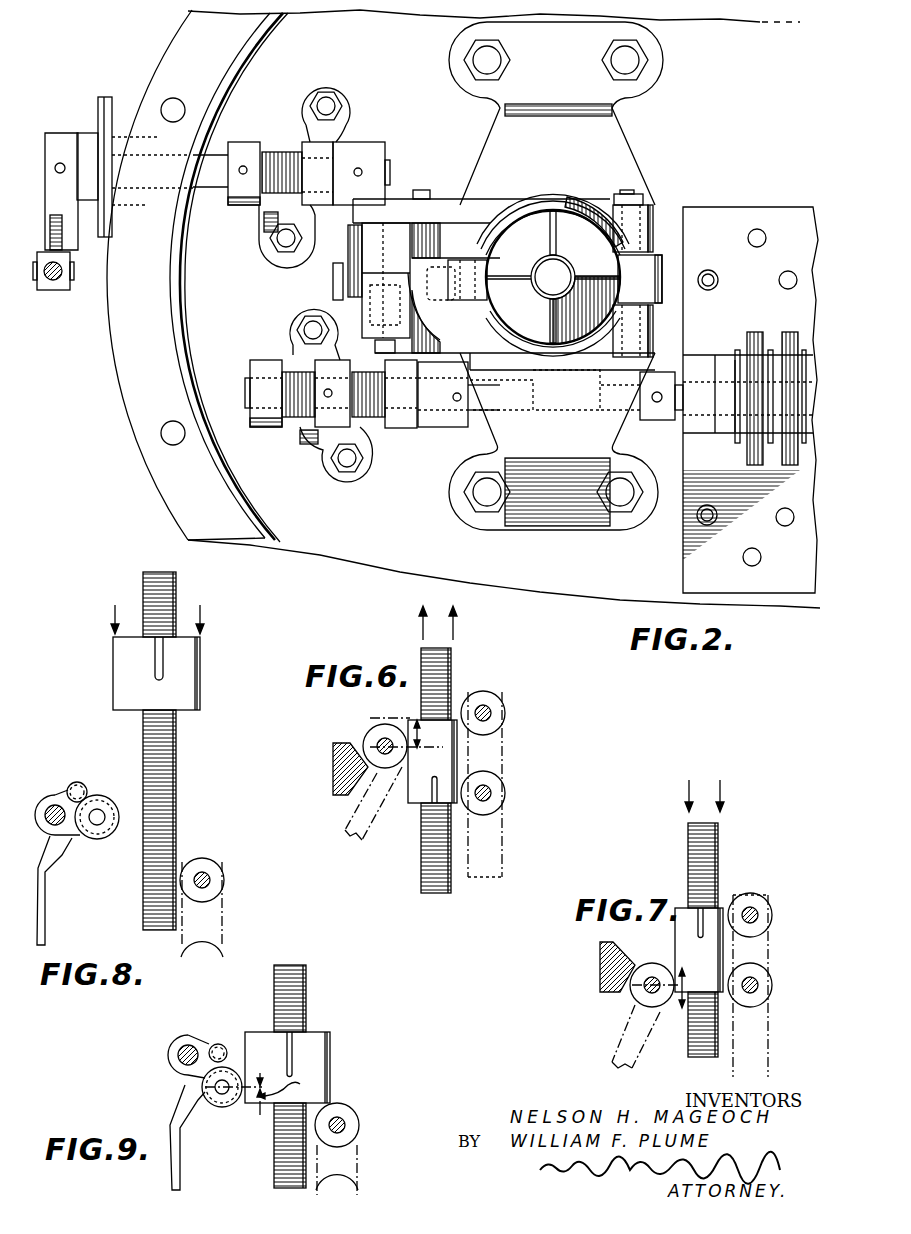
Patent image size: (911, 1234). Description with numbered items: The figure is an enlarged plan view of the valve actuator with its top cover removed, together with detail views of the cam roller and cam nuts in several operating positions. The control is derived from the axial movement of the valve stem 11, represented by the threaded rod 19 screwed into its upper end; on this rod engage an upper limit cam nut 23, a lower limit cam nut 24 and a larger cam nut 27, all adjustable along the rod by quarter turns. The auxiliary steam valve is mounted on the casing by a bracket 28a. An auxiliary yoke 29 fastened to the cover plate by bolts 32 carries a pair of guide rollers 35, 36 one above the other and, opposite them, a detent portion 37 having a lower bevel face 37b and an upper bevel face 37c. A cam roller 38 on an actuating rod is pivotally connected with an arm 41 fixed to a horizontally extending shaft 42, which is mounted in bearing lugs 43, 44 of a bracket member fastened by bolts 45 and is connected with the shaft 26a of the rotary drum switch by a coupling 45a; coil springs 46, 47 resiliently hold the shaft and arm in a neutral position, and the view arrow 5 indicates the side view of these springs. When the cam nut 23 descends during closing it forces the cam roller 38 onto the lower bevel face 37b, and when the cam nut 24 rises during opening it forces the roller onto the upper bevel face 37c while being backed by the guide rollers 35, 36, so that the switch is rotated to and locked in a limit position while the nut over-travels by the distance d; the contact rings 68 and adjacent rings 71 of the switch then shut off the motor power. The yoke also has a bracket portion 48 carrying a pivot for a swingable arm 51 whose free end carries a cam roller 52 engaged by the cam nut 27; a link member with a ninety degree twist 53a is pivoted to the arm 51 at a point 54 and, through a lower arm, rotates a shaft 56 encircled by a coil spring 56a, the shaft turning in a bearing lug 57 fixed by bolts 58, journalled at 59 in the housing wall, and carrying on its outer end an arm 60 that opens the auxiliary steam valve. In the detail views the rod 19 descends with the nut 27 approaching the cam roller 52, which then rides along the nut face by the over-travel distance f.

In FIG. 2, the view direction arrow 5 is at (347, 490).
In FIG. 2, the valve stem 11 is at (745, 218).
In FIG. 2, the threaded rod 19 is at (553, 277).
In FIG. 8, the threaded rod 19 is at (145, 607).
In FIG. 6, the threaded rod 19 is at (421, 860).
In FIG. 7, the threaded rod 19 is at (719, 845).
In FIG. 9, the threaded rod 19 is at (308, 1000).
In FIG. 2, the upper limit cam nut 23 is at (580, 208).
In FIG. 7, the upper limit cam nut 23 is at (718, 906).
In FIG. 6, the lower limit cam nut 24 is at (406, 722).
In FIG. 2, the switch shaft 26a is at (680, 425).
In FIG. 2, the cam nut 27 is at (548, 212).
In FIG. 8, the cam nut 27 is at (170, 703).
In FIG. 9, the cam nut 27 is at (333, 1062).
In FIG. 2, the bracket 28a is at (662, 294).
In FIG. 2, the auxiliary yoke 29 is at (625, 190).
In FIG. 2, the bolts 32 is at (468, 58).
In FIG. 2, the guide roller 35 is at (664, 270).
In FIG. 8, the guide roller 35 is at (213, 891).
In FIG. 6, the guide roller 35 is at (506, 713).
In FIG. 7, the guide roller 35 is at (773, 915).
In FIG. 9, the guide roller 35 is at (360, 1125).
In FIG. 6, the guide roller 36 is at (506, 795).
In FIG. 7, the guide roller 36 is at (773, 985).
In FIG. 6, the detent portion 37 is at (333, 776).
In FIG. 7, the detent portion 37 is at (598, 992).
In FIG. 6, the lower bevel face 37b is at (356, 800).
In FIG. 7, the lower bevel face 37b is at (618, 1000).
In FIG. 6, the upper bevel face 37c is at (349, 740).
In FIG. 7, the upper bevel face 37c is at (605, 942).
In FIG. 2, the cam roller 38 is at (515, 249).
In FIG. 6, the cam roller 38 is at (401, 764).
In FIG. 7, the cam roller 38 is at (653, 963).
In FIG. 2, the arm 41 is at (460, 428).
In FIG. 2, the shaft 42 is at (246, 390).
In FIG. 2, the bearing lug 43 is at (392, 428).
In FIG. 2, the bearing lug 44 is at (257, 365).
In FIG. 2, the bolts 45 is at (296, 330).
In FIG. 2, the coupling 45a is at (625, 408).
In FIG. 2, the coil spring 46 is at (300, 418).
In FIG. 2, the coil spring 47 is at (366, 440).
In FIG. 2, the bracket portion 48 is at (442, 392).
In FIG. 2, the swingable arm 51 is at (417, 237).
In FIG. 2, the cam roller 52 is at (478, 273).
In FIG. 8, the cam roller 52 is at (98, 839).
In FIG. 9, the cam roller 52 is at (232, 1103).
In FIG. 8, the ninety degree twist 53a is at (48, 872).
In FIG. 9, the ninety degree twist 53a is at (188, 1128).
In FIG. 2, the pivot point 54 is at (424, 190).
In FIG. 2, the shaft 56 is at (215, 155).
In FIG. 2, the coil spring 56a is at (283, 152).
In FIG. 2, the bearing lug 57 is at (232, 207).
In FIG. 2, the bolts 58 is at (324, 92).
In FIG. 2, the journal 59 is at (110, 97).
In FIG. 2, the arm 60 is at (63, 228).
In FIG. 2, the contact rings 68 is at (757, 332).
In FIG. 2, the roller 71 is at (794, 332).